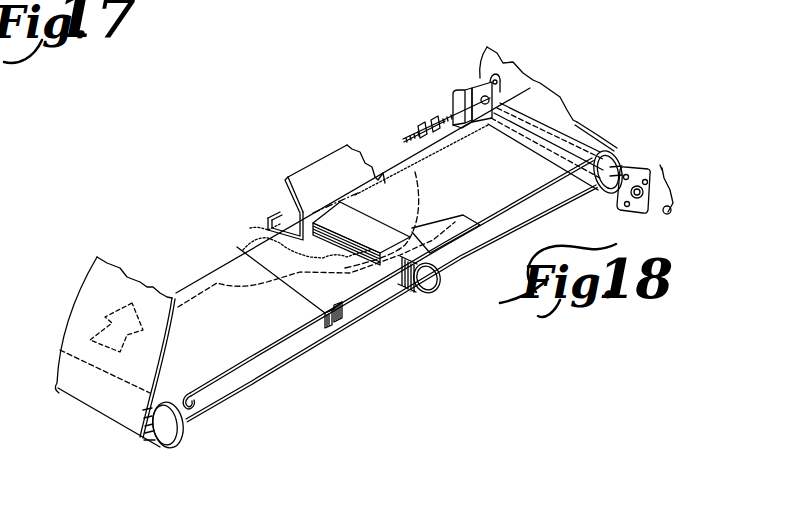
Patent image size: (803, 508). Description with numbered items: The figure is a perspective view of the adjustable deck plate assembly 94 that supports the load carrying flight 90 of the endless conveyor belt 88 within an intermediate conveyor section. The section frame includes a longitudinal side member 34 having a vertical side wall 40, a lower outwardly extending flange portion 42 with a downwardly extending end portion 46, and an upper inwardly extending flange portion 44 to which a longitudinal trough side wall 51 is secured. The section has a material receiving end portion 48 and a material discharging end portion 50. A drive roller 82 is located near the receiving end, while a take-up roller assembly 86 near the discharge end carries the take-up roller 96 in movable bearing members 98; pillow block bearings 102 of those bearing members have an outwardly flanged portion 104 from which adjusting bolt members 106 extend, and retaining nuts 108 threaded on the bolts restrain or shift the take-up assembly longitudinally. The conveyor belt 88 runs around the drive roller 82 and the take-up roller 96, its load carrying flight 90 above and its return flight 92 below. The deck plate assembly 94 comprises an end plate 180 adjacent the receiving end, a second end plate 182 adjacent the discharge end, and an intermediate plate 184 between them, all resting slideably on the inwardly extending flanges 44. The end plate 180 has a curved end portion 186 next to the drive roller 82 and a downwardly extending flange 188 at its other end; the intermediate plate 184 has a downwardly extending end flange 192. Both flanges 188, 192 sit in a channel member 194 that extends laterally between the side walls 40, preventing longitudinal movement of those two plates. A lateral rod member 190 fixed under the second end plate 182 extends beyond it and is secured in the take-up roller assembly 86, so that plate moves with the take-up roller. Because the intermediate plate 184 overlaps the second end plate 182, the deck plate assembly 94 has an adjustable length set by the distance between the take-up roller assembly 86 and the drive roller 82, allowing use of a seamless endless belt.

The longitudinal side member 34 is at (290, 141).
The vertical side wall 40 is at (272, 218).
The lower outwardly extending flange portion 42 is at (270, 213).
The upper inwardly extending flange portion 44 is at (320, 207).
The downwardly extending end portion 46 is at (266, 228).
The material receiving end portion 48 is at (83, 420).
The material discharging end portion 50 is at (620, 97).
The longitudinal trough side wall 51 is at (303, 183).
The drive roller 82 is at (165, 445).
The take-up roller assembly 86 is at (460, 64).
The endless conveyor belt 88 is at (545, 65).
The load carrying flight 90 is at (100, 276).
The return flight 92 is at (272, 372).
The deck plate assembly 94 is at (433, 322).
The take-up roller 96 is at (612, 190).
The movable bearing member 98 is at (482, 85).
The pillow block bearing 102 is at (640, 205).
The outwardly flanged portion 104 is at (456, 98).
The adjusting bolt member 106 is at (432, 120).
The retaining nut 108 is at (418, 130).
The end plate 180 is at (176, 297).
The second end plate 182 is at (397, 175).
The intermediate plate 184 is at (237, 247).
The curved end portion 186 is at (199, 405).
The downwardly extending flange 188 is at (328, 327).
The lateral rod member 190 is at (622, 172).
The downwardly extending end flange 192 is at (341, 308).
The channel member 194 is at (337, 322).